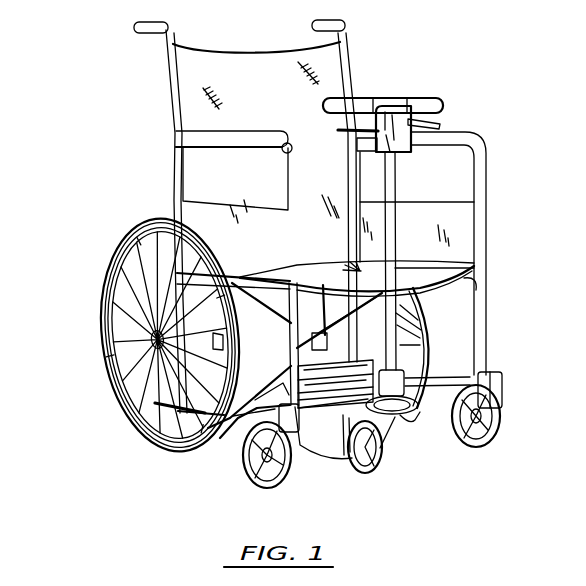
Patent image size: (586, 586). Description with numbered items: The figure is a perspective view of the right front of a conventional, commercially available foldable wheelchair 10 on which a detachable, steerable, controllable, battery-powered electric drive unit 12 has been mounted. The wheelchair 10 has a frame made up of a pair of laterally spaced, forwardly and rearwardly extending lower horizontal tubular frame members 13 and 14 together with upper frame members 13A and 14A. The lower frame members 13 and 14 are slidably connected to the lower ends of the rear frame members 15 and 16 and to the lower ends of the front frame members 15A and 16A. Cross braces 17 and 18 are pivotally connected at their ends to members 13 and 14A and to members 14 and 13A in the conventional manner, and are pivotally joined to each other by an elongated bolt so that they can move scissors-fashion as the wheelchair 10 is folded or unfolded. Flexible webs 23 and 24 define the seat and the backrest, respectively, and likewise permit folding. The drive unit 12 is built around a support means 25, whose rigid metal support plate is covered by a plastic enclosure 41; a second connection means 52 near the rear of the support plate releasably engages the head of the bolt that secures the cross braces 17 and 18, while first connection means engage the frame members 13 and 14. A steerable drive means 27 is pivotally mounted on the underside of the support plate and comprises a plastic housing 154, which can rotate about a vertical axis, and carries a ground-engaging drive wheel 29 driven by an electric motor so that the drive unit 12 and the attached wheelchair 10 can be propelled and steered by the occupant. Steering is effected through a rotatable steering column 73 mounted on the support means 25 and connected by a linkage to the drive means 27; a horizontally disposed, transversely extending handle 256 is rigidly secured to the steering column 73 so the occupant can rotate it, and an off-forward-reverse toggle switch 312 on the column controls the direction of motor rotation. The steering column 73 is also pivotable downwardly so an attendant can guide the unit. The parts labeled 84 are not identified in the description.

The wheelchair 10 is at (150, 81).
The electric drive unit 12 is at (403, 467).
The lower horizontal tubular frame member 13 is at (233, 428).
The upper frame member 13A is at (263, 279).
The lower horizontal tubular frame member 14 is at (487, 373).
The upper frame member 14A is at (478, 292).
The rear frame member 15 is at (174, 172).
The front frame member 15A is at (286, 186).
The rear frame member 16 is at (347, 44).
The front frame member 16A is at (487, 165).
The cross brace 17 is at (281, 362).
The cross brace 18 is at (261, 307).
The flexible web 23 is at (348, 270).
The flexible web 24 is at (302, 62).
The support means 25 is at (426, 398).
The steerable drive means 27 is at (341, 466).
The drive wheel 29 is at (382, 477).
The plastic enclosure 41 is at (400, 430).
The second connection means 52 is at (315, 317).
The steering column 73 is at (392, 182).
The connecting link 84 is at (283, 378).
The plastic housing 154 is at (325, 447).
The handle 256 is at (428, 97).
The toggle switch 312 is at (394, 100).